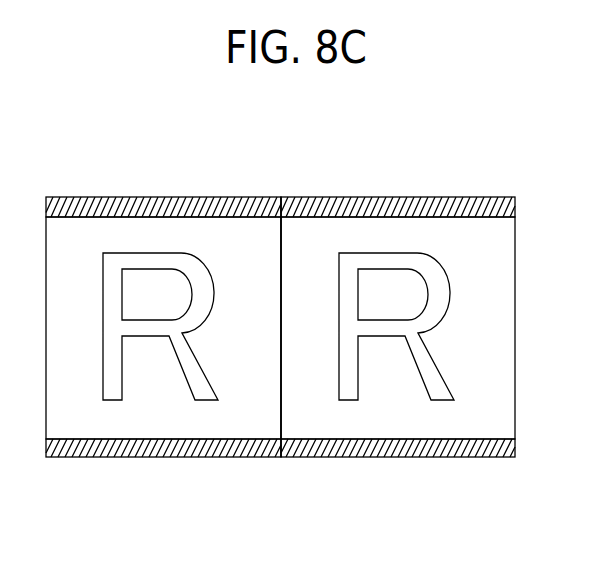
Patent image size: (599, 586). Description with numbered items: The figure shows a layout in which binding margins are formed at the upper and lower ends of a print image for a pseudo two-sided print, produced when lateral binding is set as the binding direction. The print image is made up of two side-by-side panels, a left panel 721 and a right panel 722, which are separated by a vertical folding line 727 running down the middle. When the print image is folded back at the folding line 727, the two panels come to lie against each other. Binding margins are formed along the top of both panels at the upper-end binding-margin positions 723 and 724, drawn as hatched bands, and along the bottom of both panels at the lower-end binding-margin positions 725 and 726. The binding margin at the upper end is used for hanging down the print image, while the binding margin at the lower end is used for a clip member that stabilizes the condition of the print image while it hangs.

The first display region 721 is at (159, 227).
The second display region 722 is at (449, 228).
The upper-end binding-margin position 723 is at (84, 203).
The upper-end binding-margin position 724 is at (374, 203).
The lower-end binding-margin position 725 is at (163, 448).
The lower-end binding-margin position 726 is at (422, 448).
The folding line 727 is at (282, 408).